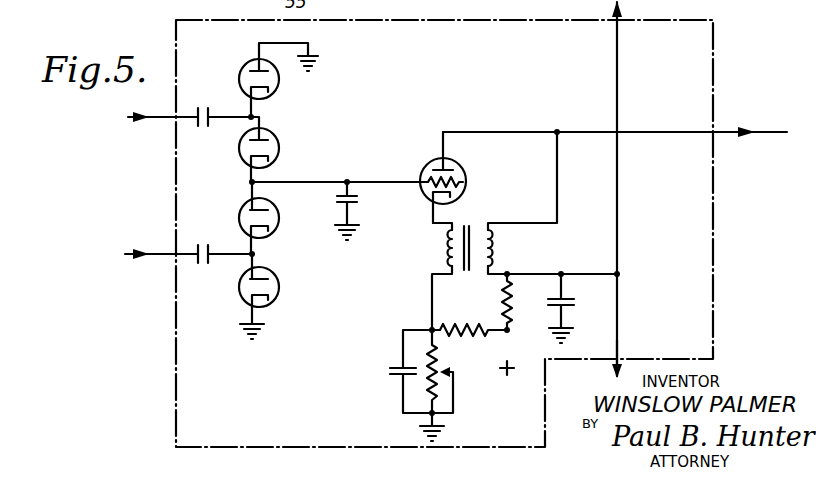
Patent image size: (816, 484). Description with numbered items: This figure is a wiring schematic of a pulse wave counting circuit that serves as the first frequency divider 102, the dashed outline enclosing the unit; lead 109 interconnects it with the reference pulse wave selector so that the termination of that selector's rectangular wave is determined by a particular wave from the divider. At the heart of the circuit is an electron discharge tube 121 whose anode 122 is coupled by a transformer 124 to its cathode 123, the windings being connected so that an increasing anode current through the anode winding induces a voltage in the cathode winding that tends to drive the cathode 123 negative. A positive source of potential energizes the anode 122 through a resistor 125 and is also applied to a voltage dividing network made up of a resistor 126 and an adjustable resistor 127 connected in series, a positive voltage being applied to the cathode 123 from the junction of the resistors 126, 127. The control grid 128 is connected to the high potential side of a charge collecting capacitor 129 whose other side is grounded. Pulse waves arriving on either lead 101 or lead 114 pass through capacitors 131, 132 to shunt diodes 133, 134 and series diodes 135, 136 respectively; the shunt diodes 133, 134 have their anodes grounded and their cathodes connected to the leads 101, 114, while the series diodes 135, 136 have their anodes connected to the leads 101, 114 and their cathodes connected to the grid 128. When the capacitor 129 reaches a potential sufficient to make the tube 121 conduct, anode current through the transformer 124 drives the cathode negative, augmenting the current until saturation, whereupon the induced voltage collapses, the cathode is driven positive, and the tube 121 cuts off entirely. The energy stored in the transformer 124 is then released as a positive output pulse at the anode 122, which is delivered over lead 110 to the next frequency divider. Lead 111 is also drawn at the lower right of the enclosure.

The lead 101 is at (137, 254).
The first frequency divider 102 is at (716, 48).
The lead 109 is at (621, 15).
The lead 110 is at (778, 132).
The lead 111 is at (613, 368).
The lead 114 is at (157, 120).
The electron discharge tube 121 is at (467, 186).
The anode 122 is at (456, 165).
The cathode 123 is at (445, 206).
The transformer 124 is at (497, 256).
The resistor 125 is at (505, 303).
The resistor 126 is at (473, 334).
The adjustable resistor 127 is at (440, 395).
The control grid 128 is at (444, 177).
The charge collecting capacitor 129 is at (359, 201).
The capacitor 131 is at (215, 236).
The capacitor 132 is at (207, 100).
The shunt diode 133 is at (282, 292).
The shunt diode 134 is at (278, 88).
The series diode 135 is at (279, 226).
The series diode 136 is at (283, 150).